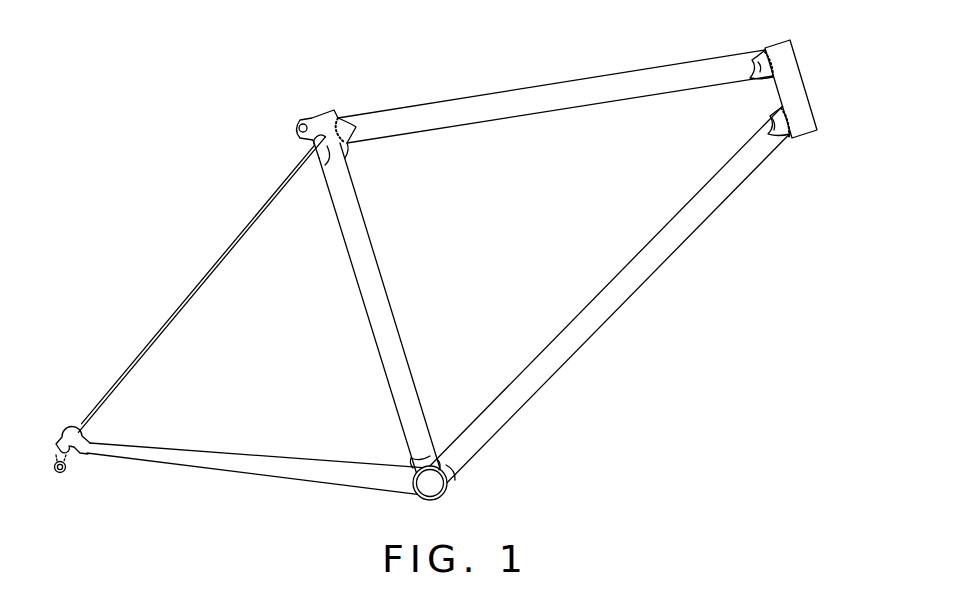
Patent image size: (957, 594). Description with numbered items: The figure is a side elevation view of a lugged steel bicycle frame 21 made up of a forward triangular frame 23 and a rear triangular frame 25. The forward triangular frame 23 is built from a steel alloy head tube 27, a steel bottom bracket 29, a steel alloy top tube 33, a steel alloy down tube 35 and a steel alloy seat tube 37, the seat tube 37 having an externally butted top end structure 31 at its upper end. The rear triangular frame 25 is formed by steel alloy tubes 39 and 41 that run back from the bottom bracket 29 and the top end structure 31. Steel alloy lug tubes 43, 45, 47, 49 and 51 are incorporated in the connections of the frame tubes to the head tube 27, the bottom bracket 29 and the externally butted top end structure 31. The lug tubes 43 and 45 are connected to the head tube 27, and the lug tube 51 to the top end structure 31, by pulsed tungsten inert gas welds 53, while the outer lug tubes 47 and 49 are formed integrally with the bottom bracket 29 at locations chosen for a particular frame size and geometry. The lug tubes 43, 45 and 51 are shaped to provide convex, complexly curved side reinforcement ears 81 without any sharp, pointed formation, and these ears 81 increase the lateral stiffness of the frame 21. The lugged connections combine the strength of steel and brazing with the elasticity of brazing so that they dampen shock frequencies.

The bicycle frame 21 is at (374, 36).
The forward triangular frame 23 is at (529, 59).
The rear triangular frame 25 is at (182, 243).
The head tube 27 is at (808, 84).
The bottom bracket 29 is at (447, 490).
The externally butted top end structure 31 is at (337, 112).
The top tube 33 is at (594, 110).
The down tube 35 is at (606, 283).
The seat tube 37 is at (386, 318).
The steel alloy tube 39 is at (256, 450).
The steel alloy tube 41 is at (176, 322).
The lug tube 43 is at (760, 50).
The lug tube 45 is at (777, 108).
The lug tube 47 is at (453, 463).
The lug tube 49 is at (412, 462).
The lug tube 51 is at (350, 147).
The pulsed TIG welds 53 is at (316, 170).
The side reinforcement ears 81 is at (356, 121).